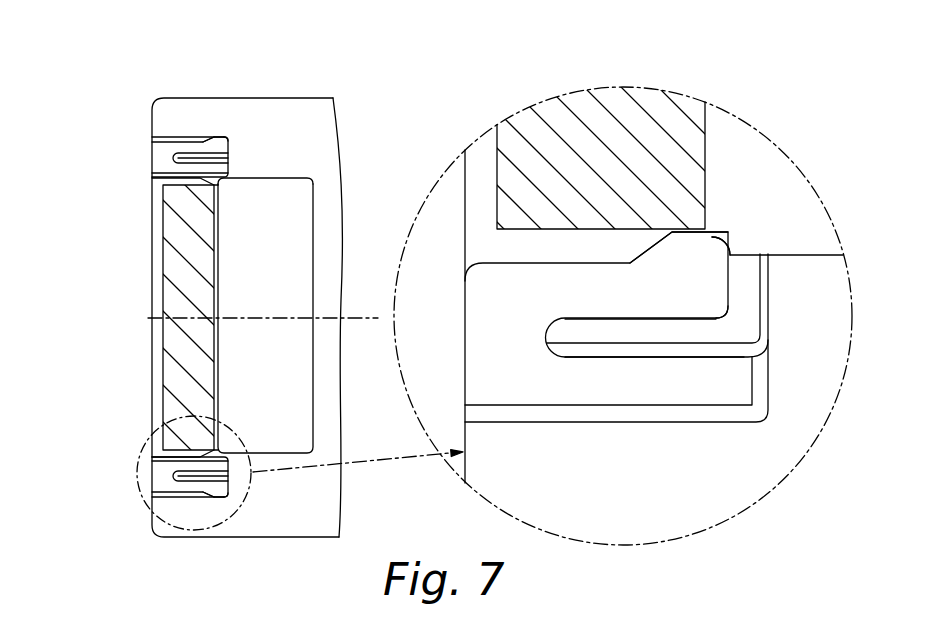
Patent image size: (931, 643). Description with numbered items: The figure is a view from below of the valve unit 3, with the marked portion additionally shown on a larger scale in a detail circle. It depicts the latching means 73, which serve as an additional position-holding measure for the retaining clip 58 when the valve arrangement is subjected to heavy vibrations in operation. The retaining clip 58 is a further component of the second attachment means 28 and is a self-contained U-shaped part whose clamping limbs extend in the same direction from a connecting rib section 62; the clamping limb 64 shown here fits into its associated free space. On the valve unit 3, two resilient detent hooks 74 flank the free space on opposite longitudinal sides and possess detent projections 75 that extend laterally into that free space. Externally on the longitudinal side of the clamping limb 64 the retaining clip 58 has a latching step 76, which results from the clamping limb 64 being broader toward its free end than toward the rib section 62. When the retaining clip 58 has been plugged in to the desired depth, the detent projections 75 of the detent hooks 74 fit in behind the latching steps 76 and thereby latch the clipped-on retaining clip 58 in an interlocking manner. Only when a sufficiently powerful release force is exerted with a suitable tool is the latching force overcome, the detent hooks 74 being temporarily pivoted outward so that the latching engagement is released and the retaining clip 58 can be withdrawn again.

The valve unit 3 is at (336, 90).
The second attachment means 28 is at (244, 160).
The retaining clip 58 is at (305, 255).
The rib section 62 is at (613, 100).
The clamping limb 64 is at (263, 338).
The latching means 73 is at (148, 160).
The detent hook 74 is at (195, 168).
The detent projection 75 is at (213, 172).
The latching step 76 is at (219, 182).